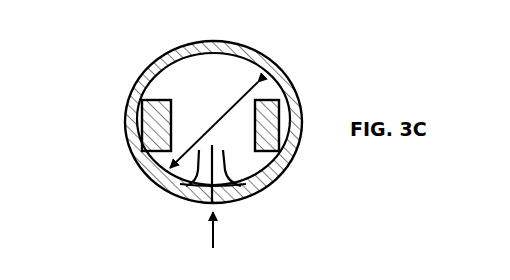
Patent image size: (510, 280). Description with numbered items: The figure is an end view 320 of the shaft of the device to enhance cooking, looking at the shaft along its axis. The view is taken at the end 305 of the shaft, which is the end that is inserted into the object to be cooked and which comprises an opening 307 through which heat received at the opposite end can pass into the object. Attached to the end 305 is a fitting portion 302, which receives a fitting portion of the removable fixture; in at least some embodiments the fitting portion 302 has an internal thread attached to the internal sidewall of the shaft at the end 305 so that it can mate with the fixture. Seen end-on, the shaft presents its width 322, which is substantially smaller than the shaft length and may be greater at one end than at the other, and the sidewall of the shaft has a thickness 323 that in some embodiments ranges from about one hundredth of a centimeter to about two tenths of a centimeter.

The end view 320 is at (69, 17).
The end 305 is at (143, 80).
The fitting portion 302 is at (290, 105).
The width 322 is at (192, 188).
The opening 307 is at (246, 188).
The thickness 323 is at (241, 238).